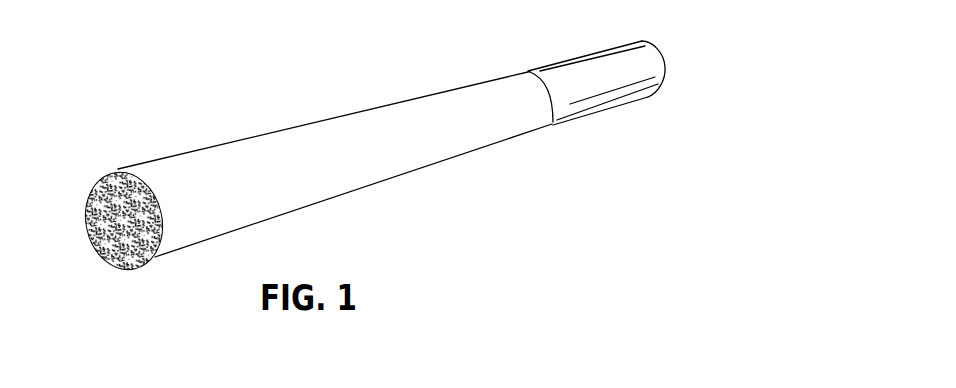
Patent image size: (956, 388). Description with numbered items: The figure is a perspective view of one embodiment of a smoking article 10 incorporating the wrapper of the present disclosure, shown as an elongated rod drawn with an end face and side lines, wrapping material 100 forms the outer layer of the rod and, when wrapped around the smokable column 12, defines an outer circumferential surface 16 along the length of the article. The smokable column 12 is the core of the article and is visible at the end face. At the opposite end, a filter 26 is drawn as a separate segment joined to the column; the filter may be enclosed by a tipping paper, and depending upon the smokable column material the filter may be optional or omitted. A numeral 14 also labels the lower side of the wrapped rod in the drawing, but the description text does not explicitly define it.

The smoking article 10 is at (361, 173).
The wrapping material 100 is at (335, 149).
The smokable column 12 is at (105, 258).
The outer surface of rod 14 is at (370, 186).
The outer circumferential surface 16 is at (318, 173).
The filter 26 is at (612, 102).